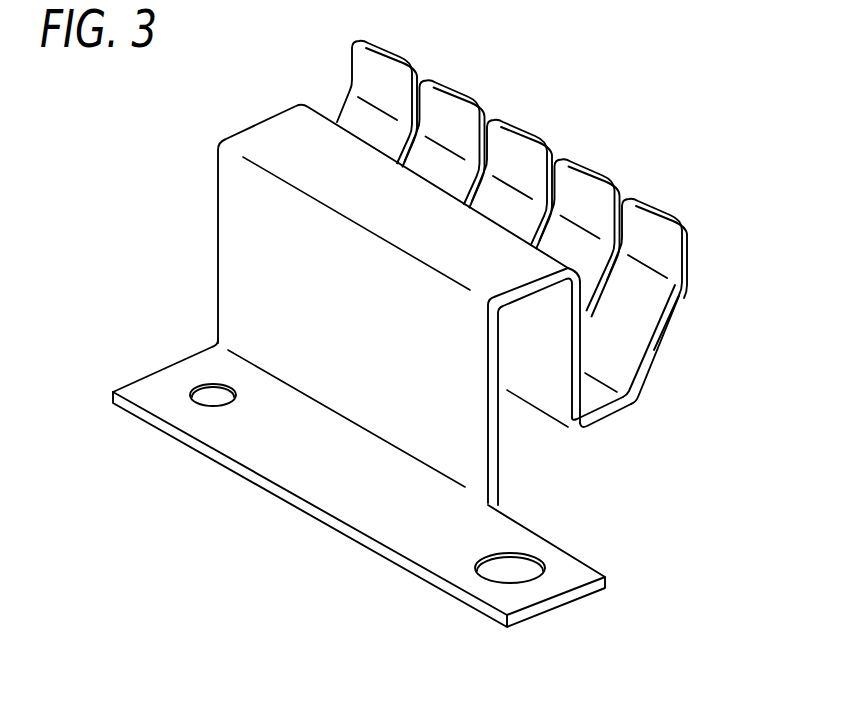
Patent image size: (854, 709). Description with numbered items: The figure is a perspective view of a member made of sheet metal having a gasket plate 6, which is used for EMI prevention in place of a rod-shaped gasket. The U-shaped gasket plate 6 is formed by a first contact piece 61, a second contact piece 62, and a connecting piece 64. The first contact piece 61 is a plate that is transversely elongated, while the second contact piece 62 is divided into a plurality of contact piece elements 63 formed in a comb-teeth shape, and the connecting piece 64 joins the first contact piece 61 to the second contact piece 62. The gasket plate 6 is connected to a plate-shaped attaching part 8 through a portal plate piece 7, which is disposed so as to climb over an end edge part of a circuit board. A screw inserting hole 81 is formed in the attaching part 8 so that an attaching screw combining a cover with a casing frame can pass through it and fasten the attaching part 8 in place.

The gasket plate 6 is at (549, 273).
The portal plate piece 7 is at (217, 213).
The attaching part 8 is at (359, 491).
The screw inserting hole 81 is at (477, 573).
The first contact piece 61 is at (555, 402).
The second contact piece 62 is at (655, 350).
The contact piece elements 63 is at (598, 282).
The connecting piece 64 is at (610, 412).